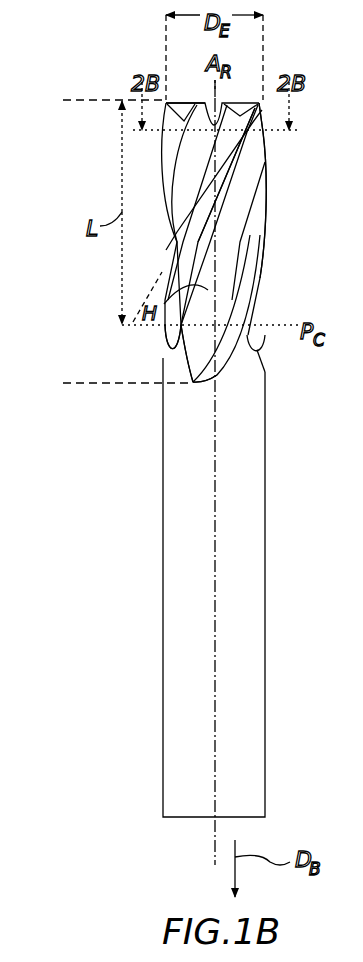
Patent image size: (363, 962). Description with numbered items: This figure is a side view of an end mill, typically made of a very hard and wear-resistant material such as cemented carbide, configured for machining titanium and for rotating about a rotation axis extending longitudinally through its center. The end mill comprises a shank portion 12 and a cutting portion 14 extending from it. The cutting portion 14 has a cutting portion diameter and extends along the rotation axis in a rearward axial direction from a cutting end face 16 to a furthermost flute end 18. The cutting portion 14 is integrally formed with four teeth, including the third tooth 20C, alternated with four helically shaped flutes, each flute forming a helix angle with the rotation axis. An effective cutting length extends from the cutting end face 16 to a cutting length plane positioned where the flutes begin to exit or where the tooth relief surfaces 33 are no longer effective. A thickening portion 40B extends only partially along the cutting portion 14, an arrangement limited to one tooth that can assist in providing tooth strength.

The shank portion 12 is at (70, 383).
The cutting portion 14 is at (70, 100).
The cutting end face 16 is at (178, 95).
The furthermost flute end 18 is at (194, 392).
The third tooth 20C is at (253, 222).
The tooth relief surface 33 is at (176, 330).
The thickening portion 40B is at (264, 150).